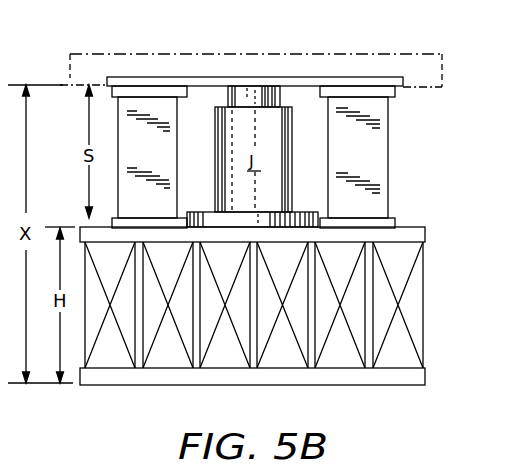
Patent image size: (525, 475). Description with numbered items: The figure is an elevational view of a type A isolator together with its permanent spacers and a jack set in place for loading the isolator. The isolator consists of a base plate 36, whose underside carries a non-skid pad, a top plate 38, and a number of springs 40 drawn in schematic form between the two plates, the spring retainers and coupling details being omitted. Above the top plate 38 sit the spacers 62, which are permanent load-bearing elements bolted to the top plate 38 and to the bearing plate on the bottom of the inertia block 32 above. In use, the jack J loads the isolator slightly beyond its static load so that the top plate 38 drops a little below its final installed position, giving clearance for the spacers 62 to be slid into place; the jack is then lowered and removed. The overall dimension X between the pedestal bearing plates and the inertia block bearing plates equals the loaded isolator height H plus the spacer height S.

The platform deck structure 32 is at (400, 78).
The spacers 62 is at (158, 107).
The top plate 38 is at (422, 235).
The springs 40 is at (420, 300).
The base plate 36 is at (422, 378).